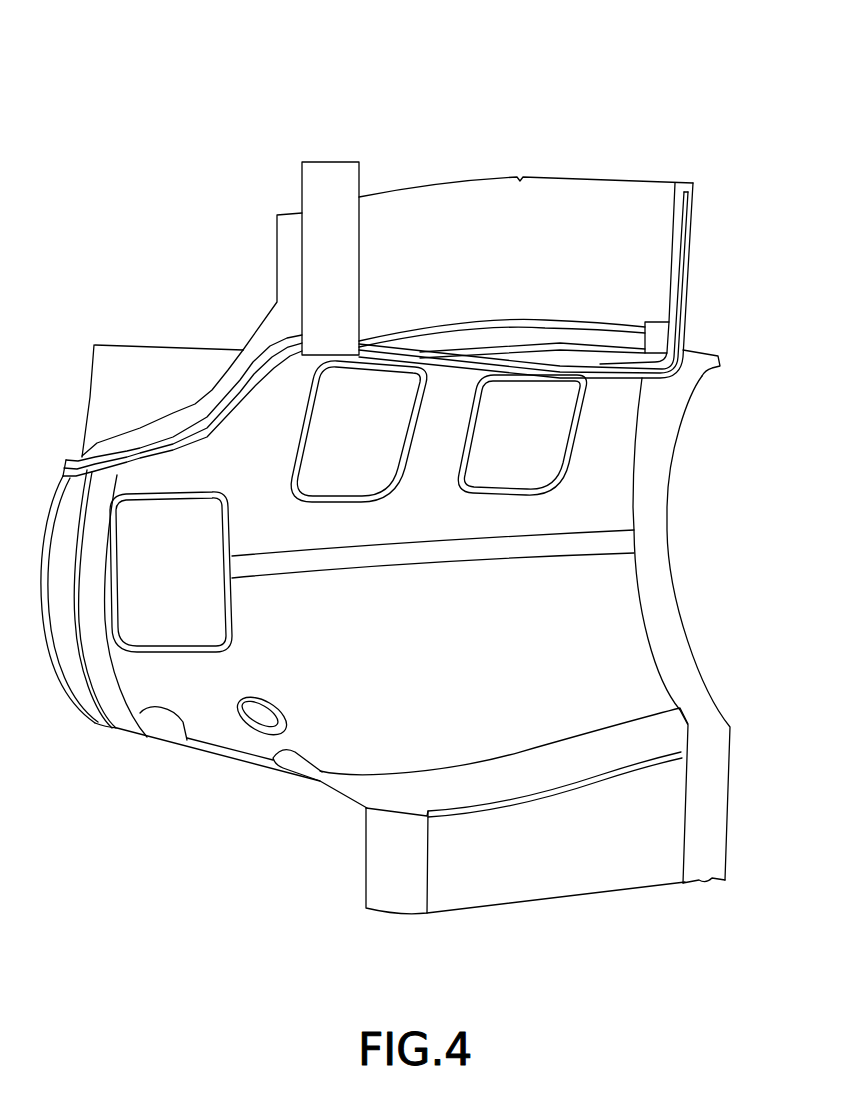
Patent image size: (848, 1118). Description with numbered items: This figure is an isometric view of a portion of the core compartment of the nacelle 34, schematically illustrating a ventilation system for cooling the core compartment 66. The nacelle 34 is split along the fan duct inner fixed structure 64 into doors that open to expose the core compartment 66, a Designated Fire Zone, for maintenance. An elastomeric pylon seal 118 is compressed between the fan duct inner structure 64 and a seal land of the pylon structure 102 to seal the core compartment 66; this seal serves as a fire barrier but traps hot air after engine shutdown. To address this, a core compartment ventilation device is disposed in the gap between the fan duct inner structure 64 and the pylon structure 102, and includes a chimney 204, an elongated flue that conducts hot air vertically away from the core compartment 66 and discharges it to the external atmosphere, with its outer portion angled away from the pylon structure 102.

The nacelle 34 is at (78, 40).
The fan duct inner fixed structure 64 is at (276, 232).
The core compartment 66 is at (348, 493).
The pylon structure 102 is at (528, 125).
The elastomeric pylon seal 118 is at (684, 240).
The chimney 204 is at (365, 108).